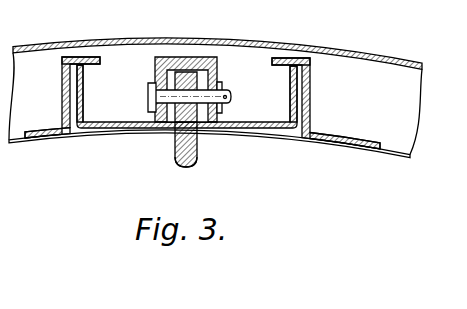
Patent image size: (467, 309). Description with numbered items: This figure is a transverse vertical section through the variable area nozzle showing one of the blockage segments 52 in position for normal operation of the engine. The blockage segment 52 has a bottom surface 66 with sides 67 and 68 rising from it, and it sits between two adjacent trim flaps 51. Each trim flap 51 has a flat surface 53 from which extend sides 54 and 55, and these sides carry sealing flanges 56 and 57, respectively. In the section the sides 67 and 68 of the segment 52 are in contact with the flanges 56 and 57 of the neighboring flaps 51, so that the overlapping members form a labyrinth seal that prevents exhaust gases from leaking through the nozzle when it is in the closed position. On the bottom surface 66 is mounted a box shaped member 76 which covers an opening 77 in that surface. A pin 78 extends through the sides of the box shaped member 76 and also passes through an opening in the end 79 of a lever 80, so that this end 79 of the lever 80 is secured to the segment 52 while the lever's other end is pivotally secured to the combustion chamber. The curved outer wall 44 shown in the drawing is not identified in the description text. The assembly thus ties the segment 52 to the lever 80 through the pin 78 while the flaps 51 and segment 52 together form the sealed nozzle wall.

The outer rim plate 44 is at (220, 39).
The trim flap 51 is at (370, 135).
The blockage segment 52 is at (124, 139).
The flat surface 53 is at (45, 137).
The side 54 is at (62, 99).
The side 55 is at (310, 100).
The sealing flange 56 is at (80, 57).
The sealing flange 57 is at (285, 58).
The bottom surface 66 is at (240, 134).
The side 67 is at (84, 98).
The side 68 is at (290, 96).
The box shaped member 76 is at (216, 74).
The opening 77 is at (176, 130).
The pin 78 is at (148, 90).
The end of lever 79 is at (188, 153).
The lever 80 is at (174, 168).